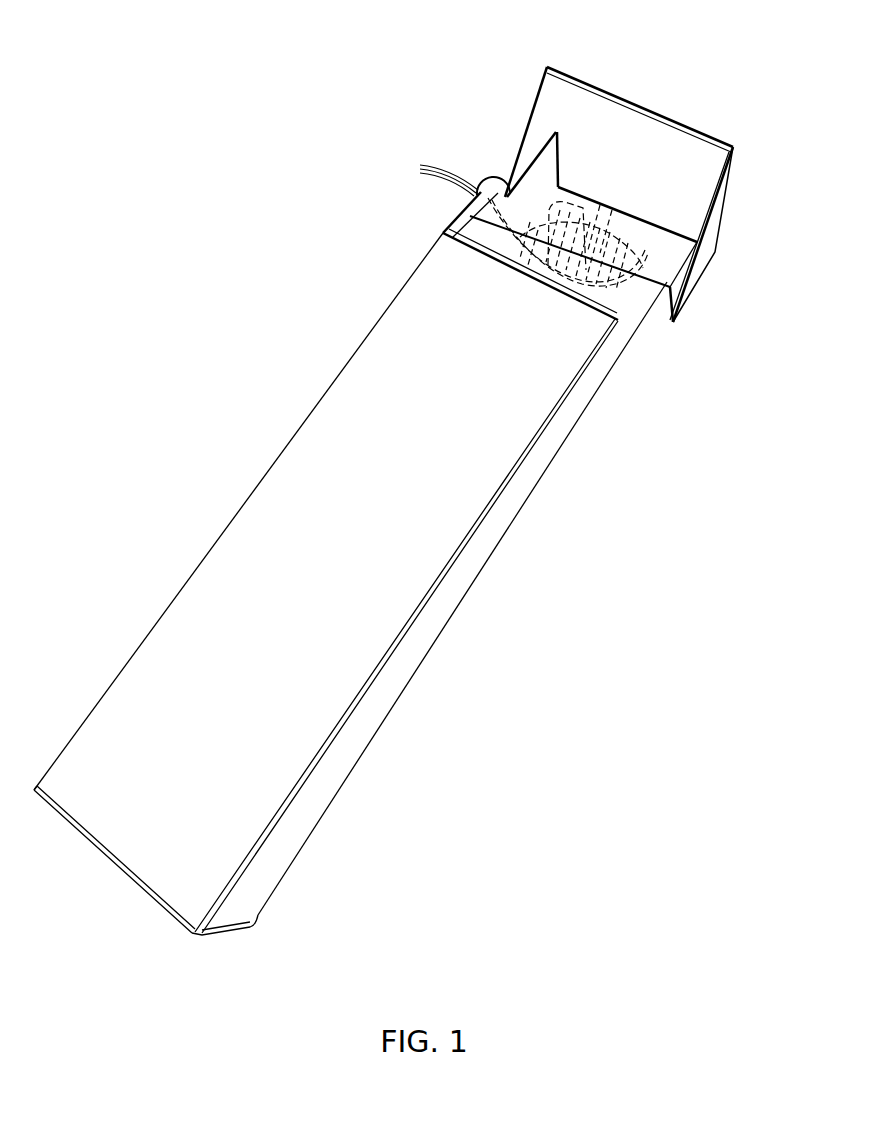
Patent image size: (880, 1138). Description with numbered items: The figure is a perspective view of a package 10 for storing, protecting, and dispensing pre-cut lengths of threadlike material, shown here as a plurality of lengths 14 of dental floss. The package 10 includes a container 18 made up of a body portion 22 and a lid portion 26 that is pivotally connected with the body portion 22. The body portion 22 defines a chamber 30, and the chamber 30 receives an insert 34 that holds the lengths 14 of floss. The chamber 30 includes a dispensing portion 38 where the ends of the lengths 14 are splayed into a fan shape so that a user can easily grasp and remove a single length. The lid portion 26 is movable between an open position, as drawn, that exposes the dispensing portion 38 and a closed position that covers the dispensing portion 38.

The package 10 is at (298, 266).
The lengths of dental floss 14 is at (520, 224).
The container 18 is at (462, 578).
The body portion 22 is at (228, 595).
The lid portion 26 is at (677, 152).
The chamber 30 is at (601, 108).
The insert 34 is at (615, 300).
The dispensing portion 38 is at (434, 196).